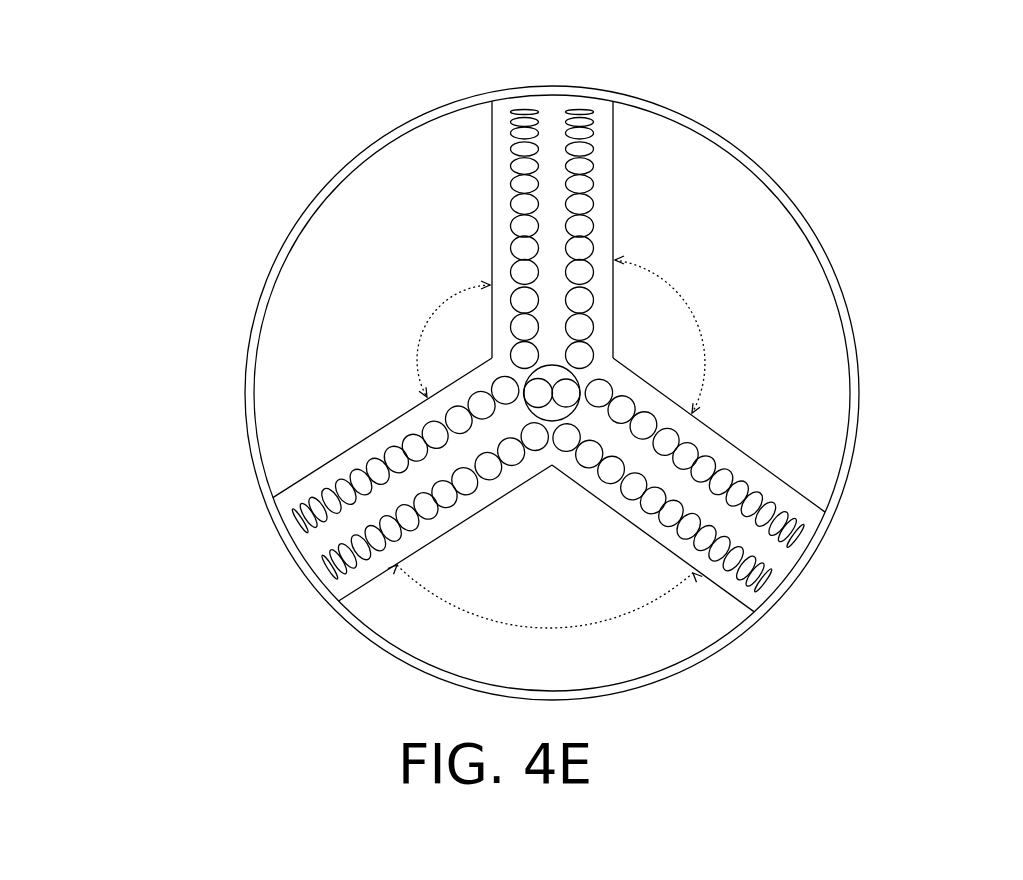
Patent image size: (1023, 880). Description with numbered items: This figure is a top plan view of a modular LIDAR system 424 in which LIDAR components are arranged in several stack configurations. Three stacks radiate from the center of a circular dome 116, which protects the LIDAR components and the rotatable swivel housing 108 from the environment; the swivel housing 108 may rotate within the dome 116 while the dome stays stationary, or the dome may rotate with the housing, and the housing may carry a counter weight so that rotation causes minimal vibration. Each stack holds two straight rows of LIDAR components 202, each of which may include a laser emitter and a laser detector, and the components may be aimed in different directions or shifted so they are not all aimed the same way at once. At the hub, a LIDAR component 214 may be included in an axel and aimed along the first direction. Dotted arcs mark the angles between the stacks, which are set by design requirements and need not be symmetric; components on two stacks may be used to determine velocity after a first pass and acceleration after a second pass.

The modular LIDAR system 424 is at (577, 390).
The dome 116 is at (612, 393).
The rotatable swivel housing 108 is at (354, 229).
The LIDAR component 202 is at (703, 190).
The LIDAR component 214 is at (380, 337).